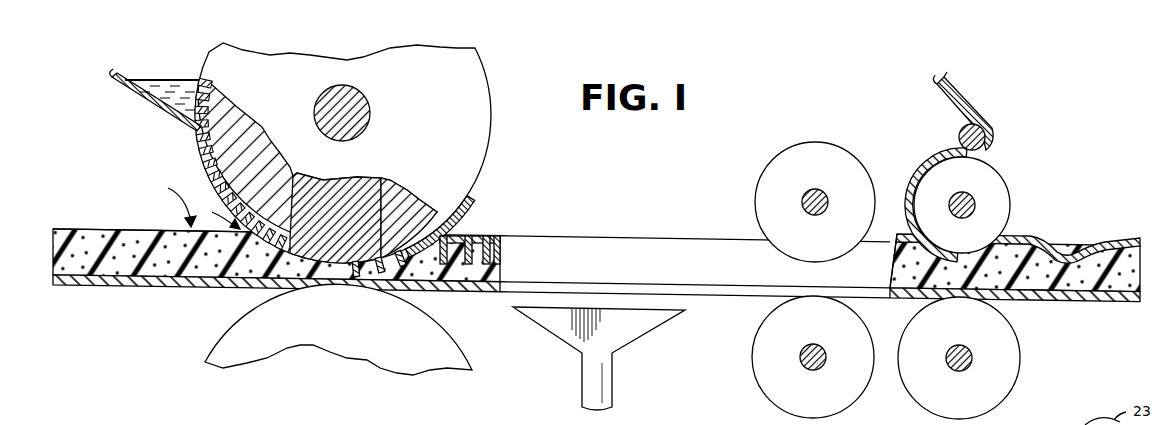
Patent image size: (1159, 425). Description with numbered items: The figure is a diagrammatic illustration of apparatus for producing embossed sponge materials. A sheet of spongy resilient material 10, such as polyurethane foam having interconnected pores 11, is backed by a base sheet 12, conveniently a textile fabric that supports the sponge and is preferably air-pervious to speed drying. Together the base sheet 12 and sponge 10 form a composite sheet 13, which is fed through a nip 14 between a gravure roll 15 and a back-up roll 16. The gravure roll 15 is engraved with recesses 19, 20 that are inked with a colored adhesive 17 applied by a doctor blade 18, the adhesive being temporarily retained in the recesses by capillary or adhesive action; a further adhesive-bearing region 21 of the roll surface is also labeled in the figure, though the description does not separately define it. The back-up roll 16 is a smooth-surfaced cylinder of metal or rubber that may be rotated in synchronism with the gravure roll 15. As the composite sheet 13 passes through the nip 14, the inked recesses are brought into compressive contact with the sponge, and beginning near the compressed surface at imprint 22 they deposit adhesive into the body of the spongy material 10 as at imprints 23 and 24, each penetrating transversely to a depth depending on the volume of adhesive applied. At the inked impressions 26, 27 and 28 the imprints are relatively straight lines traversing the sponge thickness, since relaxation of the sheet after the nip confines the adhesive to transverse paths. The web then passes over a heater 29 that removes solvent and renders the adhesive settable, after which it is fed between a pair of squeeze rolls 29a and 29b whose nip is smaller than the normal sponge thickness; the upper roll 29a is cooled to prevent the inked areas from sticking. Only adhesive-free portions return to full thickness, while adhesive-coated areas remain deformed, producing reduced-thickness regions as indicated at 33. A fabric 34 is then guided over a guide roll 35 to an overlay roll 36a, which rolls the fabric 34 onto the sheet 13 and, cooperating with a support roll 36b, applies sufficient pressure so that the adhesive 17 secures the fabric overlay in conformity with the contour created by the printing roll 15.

The spongy resilient material 10 is at (172, 232).
The pores 11 is at (95, 232).
The base sheet 12 is at (115, 282).
The composite sheet 13 is at (173, 203).
The nip 14 is at (221, 218).
The gravure roll 15 is at (468, 150).
The back-up roll 16 is at (240, 332).
The adhesive 17 is at (197, 90).
The doctor blade 18 is at (163, 114).
The recesses 19 is at (230, 153).
The recesses 20 is at (295, 178).
The adhesive band 21 is at (383, 180).
The imprint 22 is at (328, 271).
The imprint 23 is at (337, 270).
The imprint 24 is at (352, 272).
The inked impression 26 is at (452, 237).
The inked impression 27 is at (473, 237).
The inked impression 28 is at (497, 240).
The heater 29 is at (640, 323).
The squeeze roll 29a is at (792, 160).
The squeeze roll 29b is at (773, 366).
The reduced-thickness areas 33 is at (865, 252).
The fabric 34 is at (960, 100).
The guide roll 35 is at (959, 133).
The overlay roll 36a is at (988, 188).
The support roll 36b is at (1007, 357).